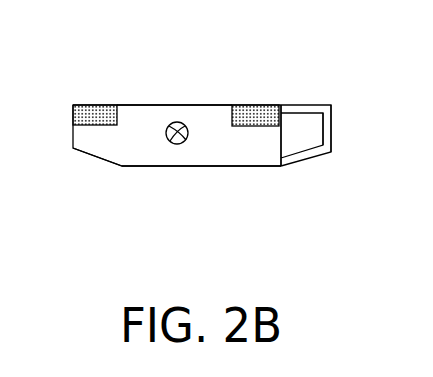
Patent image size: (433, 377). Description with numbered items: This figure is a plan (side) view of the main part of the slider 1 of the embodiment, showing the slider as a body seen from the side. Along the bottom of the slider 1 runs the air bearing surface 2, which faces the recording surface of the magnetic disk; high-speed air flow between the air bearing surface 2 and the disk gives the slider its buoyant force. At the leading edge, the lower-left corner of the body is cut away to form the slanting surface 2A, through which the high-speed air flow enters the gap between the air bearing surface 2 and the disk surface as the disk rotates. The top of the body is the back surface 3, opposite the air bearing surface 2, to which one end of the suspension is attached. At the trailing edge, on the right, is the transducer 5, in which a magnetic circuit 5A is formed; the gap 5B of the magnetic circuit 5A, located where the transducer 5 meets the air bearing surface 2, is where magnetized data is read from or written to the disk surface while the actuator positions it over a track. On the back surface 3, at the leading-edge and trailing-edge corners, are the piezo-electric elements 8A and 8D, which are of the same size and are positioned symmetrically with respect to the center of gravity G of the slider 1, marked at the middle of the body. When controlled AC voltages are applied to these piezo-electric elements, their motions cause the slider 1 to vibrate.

The slider 1 is at (136, 90).
The air bearing surface 2 is at (183, 167).
The slanting surface 2A is at (87, 156).
The back surface 3 is at (193, 104).
The transducer 5 is at (342, 109).
The magnetic circuit 5A is at (328, 130).
The gap 5B is at (281, 167).
The piezo-electric element 8A is at (73, 110).
The piezo-electric element 8D is at (257, 106).
The center of gravity G is at (192, 133).